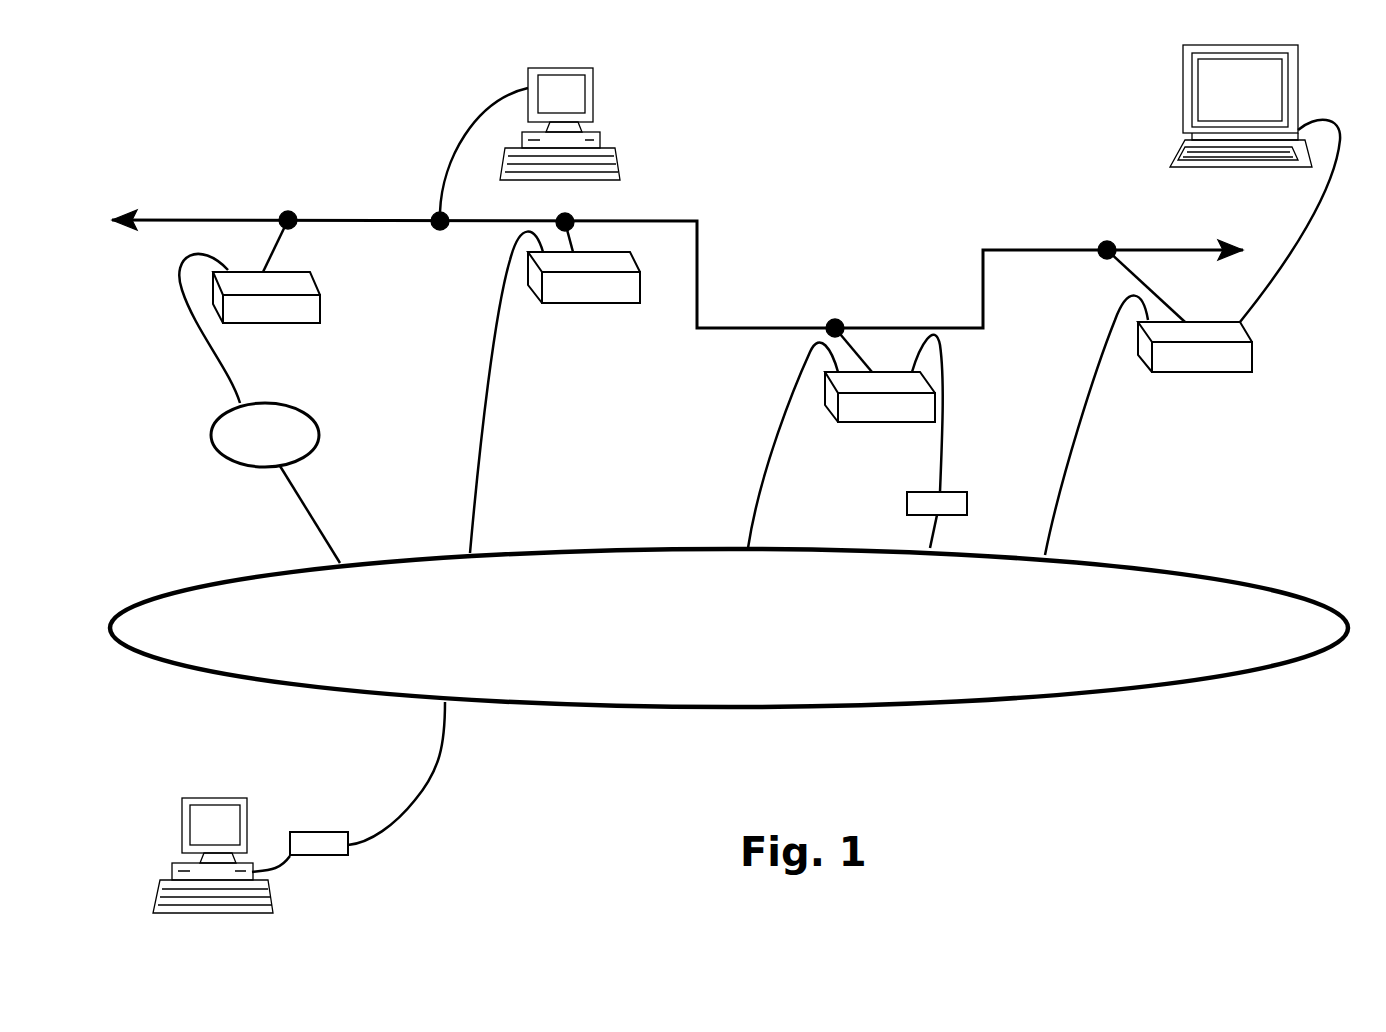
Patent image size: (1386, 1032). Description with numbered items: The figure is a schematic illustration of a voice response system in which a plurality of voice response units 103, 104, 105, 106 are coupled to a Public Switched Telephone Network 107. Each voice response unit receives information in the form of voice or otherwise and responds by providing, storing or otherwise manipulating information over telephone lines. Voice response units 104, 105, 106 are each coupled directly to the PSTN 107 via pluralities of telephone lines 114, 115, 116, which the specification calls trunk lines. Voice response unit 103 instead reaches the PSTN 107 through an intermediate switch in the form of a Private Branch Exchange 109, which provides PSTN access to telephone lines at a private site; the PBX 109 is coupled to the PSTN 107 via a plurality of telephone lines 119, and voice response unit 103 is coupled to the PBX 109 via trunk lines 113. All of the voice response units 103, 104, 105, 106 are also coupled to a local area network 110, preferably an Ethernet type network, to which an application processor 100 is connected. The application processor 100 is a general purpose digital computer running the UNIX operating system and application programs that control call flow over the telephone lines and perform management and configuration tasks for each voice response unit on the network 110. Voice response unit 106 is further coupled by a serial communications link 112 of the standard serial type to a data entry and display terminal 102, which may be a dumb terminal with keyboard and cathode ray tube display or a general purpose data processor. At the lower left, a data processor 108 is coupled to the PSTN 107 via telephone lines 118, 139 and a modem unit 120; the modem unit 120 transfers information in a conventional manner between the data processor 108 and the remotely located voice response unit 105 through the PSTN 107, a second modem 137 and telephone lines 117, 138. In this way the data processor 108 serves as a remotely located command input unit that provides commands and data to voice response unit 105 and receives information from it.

The application processor 100 is at (602, 137).
The data entry and display terminal 102 is at (1183, 92).
The voice response unit 103 is at (322, 285).
The voice response unit 104 is at (625, 305).
The voice response unit 105 is at (918, 424).
The voice response unit 106 is at (1180, 374).
The Public Switched Telephone Network 107 is at (196, 582).
The data processor 108 is at (181, 822).
The Private Branch Exchange 109 is at (320, 440).
The local area network 110 is at (697, 298).
The serial RS-232 communications link 112 is at (1320, 200).
The trunk lines 113 is at (225, 378).
The telephone lines 114 is at (485, 427).
The telephone lines 115 is at (760, 505).
The telephone lines 116 is at (1070, 467).
The telephone line 117 is at (943, 462).
The telephone line 118 is at (428, 790).
The telephone lines 119 is at (322, 515).
The modem unit 120 is at (307, 830).
The modem 137 is at (967, 493).
The telephone line 138 is at (930, 540).
The telephone line 139 is at (285, 875).